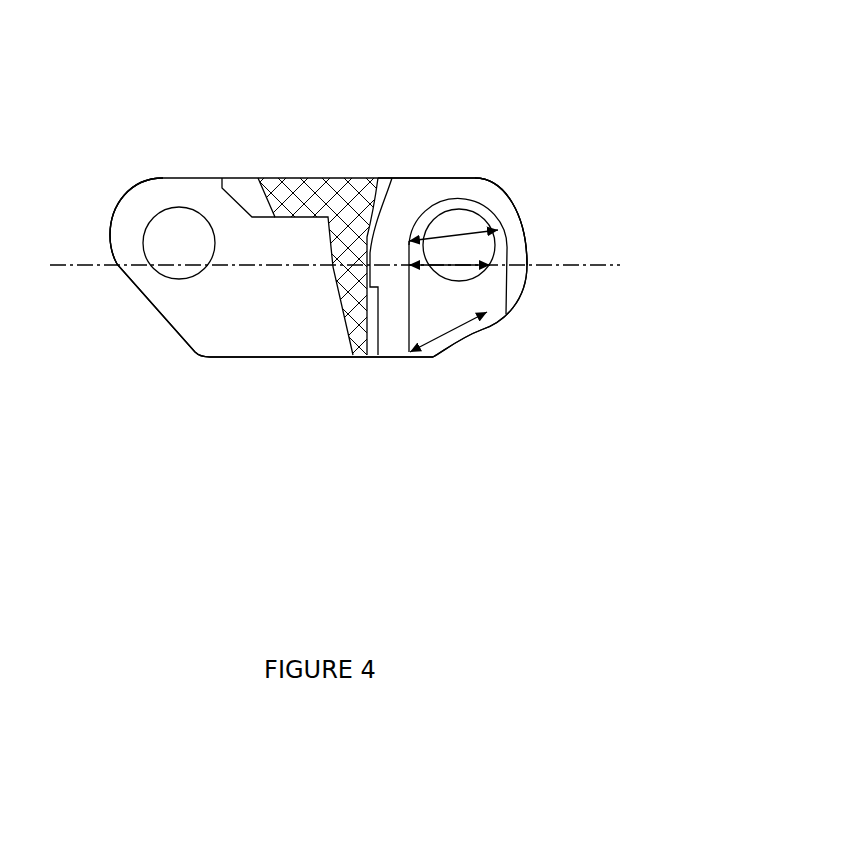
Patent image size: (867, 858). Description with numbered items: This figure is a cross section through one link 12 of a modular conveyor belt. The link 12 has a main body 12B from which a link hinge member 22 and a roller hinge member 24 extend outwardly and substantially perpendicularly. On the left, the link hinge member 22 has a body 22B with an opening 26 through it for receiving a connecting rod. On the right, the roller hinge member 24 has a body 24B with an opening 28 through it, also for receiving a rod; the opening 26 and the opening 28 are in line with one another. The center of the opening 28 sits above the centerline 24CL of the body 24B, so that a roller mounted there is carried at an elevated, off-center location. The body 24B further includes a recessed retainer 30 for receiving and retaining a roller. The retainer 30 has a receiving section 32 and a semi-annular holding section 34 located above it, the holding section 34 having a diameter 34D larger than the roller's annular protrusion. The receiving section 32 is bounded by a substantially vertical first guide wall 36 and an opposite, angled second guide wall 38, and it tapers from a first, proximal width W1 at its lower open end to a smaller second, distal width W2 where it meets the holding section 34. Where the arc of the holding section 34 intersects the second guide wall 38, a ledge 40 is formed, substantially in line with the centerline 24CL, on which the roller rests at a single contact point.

The link 12 is at (175, 113).
The main body 12B is at (322, 178).
The link hinge member 22 is at (150, 310).
The body of link hinge member 22B is at (125, 237).
The roller hinge member 24 is at (498, 192).
The body of roller hinge member 24B is at (507, 205).
The centerline 24CL is at (612, 266).
The opening 26 is at (143, 227).
The opening 28 is at (437, 210).
The recessed retainer 30 is at (487, 365).
The receiving section 32 is at (433, 355).
The holding section 34 is at (478, 190).
The diameter of holding section 34D is at (452, 235).
The first guide wall 36 is at (415, 302).
The second guide wall 38 is at (497, 280).
The ledge 40 is at (494, 249).
The first width W1 is at (440, 337).
The second width W2 is at (443, 265).